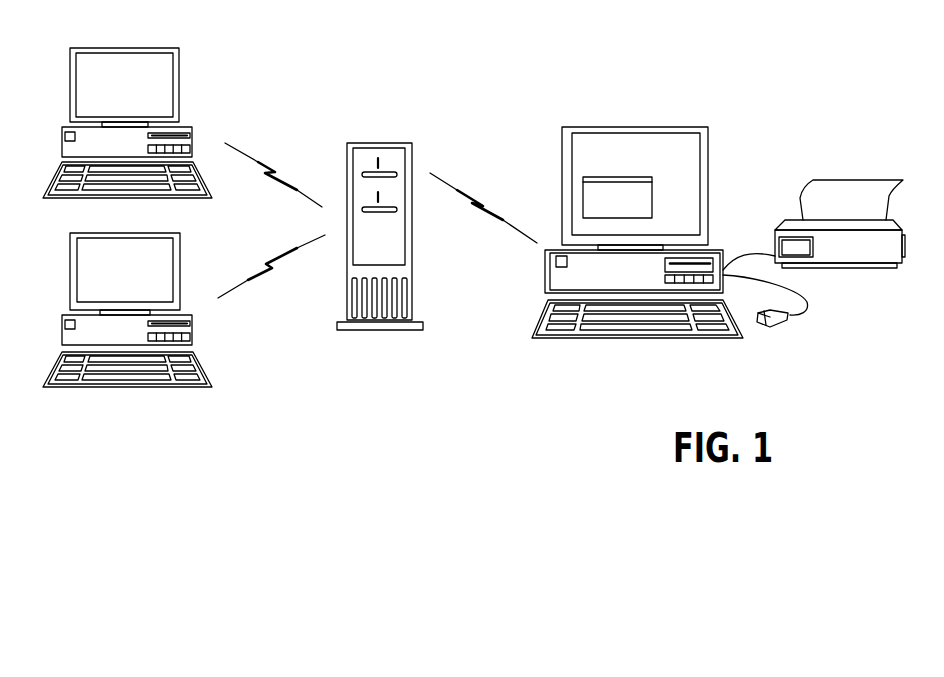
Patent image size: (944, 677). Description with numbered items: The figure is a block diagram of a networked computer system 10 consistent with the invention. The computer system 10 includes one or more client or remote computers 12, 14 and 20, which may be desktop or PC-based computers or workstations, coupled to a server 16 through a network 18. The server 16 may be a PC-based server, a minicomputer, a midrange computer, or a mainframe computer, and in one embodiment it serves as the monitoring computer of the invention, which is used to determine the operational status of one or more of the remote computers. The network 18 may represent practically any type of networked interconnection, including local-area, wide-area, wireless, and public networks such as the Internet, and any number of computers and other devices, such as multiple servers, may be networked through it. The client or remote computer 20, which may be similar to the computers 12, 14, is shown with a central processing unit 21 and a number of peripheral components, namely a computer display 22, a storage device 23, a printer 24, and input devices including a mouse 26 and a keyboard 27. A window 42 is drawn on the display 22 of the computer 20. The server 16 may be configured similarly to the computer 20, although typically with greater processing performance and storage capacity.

The computer system 10 is at (509, 62).
The client or remote computer 12 is at (163, 47).
The client or remote computer 14 is at (165, 232).
The server 16 is at (372, 142).
The network 18 is at (252, 154).
The client or remote computer 20 is at (646, 229).
The central processing unit 21 is at (607, 281).
The computer display 22 is at (593, 127).
The storage device 23 is at (713, 253).
The printer 24 is at (847, 268).
The mouse 26 is at (789, 322).
The keyboard 27 is at (540, 340).
The window 42 is at (641, 174).